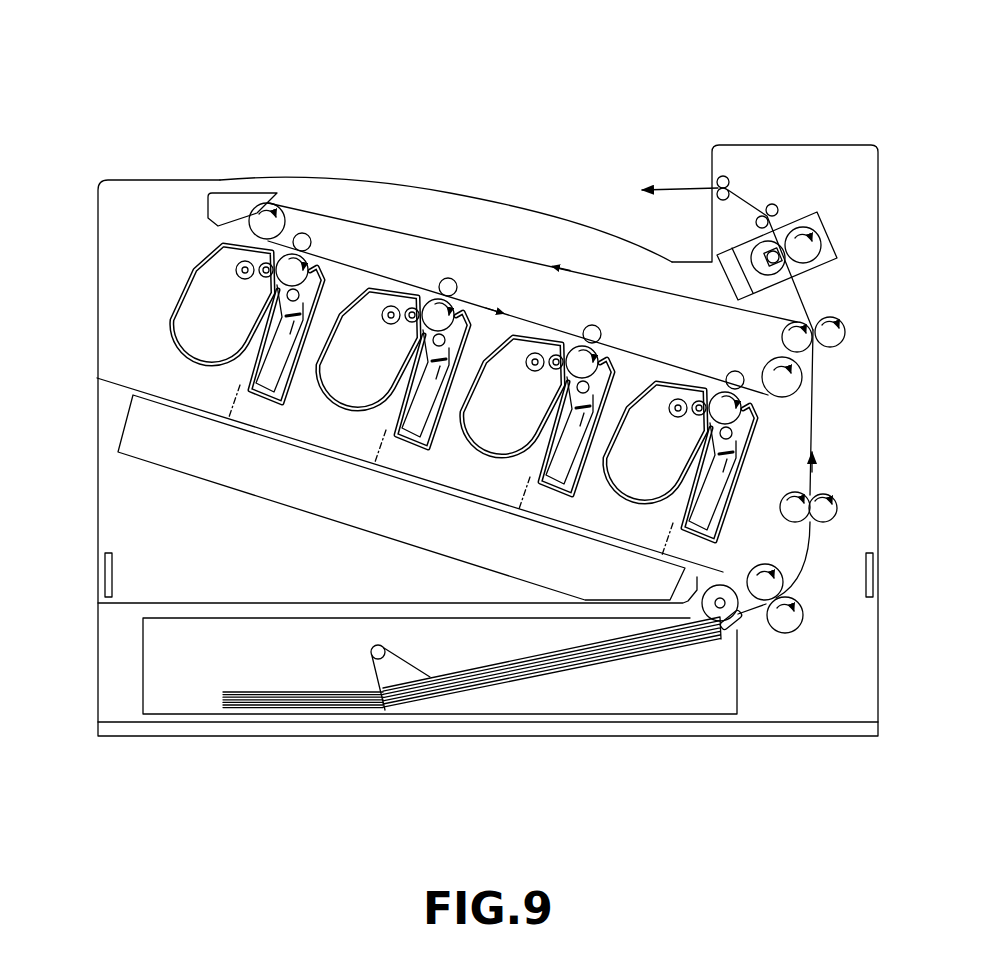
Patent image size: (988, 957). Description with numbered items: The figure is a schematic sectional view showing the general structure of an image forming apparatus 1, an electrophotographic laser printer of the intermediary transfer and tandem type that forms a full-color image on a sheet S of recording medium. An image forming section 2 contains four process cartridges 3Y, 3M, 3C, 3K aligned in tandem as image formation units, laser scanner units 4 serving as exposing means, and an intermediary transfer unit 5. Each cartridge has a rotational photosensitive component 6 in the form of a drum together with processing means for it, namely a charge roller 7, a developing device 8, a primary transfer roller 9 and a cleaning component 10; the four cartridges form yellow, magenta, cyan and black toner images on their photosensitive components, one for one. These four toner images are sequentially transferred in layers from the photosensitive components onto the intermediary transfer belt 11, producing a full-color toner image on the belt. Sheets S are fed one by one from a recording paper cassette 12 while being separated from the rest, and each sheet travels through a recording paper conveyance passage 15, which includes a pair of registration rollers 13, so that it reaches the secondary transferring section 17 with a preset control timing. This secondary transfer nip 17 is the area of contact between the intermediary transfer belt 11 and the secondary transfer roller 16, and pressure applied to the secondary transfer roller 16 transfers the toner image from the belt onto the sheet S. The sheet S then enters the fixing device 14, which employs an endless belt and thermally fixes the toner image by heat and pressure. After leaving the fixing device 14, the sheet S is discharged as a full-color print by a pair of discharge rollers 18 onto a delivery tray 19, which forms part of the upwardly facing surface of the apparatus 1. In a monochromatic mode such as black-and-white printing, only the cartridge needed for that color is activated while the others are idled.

The image forming apparatus 1 is at (779, 117).
The image forming section 2 is at (160, 245).
The process cartridge 3Y is at (219, 331).
The process cartridge 3M is at (365, 376).
The process cartridge 3C is at (509, 423).
The process cartridge 3K is at (652, 469).
The laser scanner unit 4 is at (398, 530).
The intermediary transfer unit 5 is at (563, 313).
The photosensitive component 6 is at (508, 339).
The charge roller 7 is at (507, 391).
The developing device 8 is at (471, 356).
The primary transfer roller 9 is at (732, 370).
The cleaning component 10 is at (521, 404).
The intermediary transfer belt 11 is at (398, 281).
The recording paper cassette 12 is at (738, 673).
The registration rollers 13 is at (826, 521).
The fixing device 14 is at (841, 228).
The recording paper conveyance passage 15 is at (816, 433).
The secondary transfer roller 16 is at (834, 339).
The secondary transferring section 17 is at (817, 325).
The discharge rollers 18 is at (729, 184).
The delivery tray 19 is at (513, 198).
The sheet S is at (498, 668).